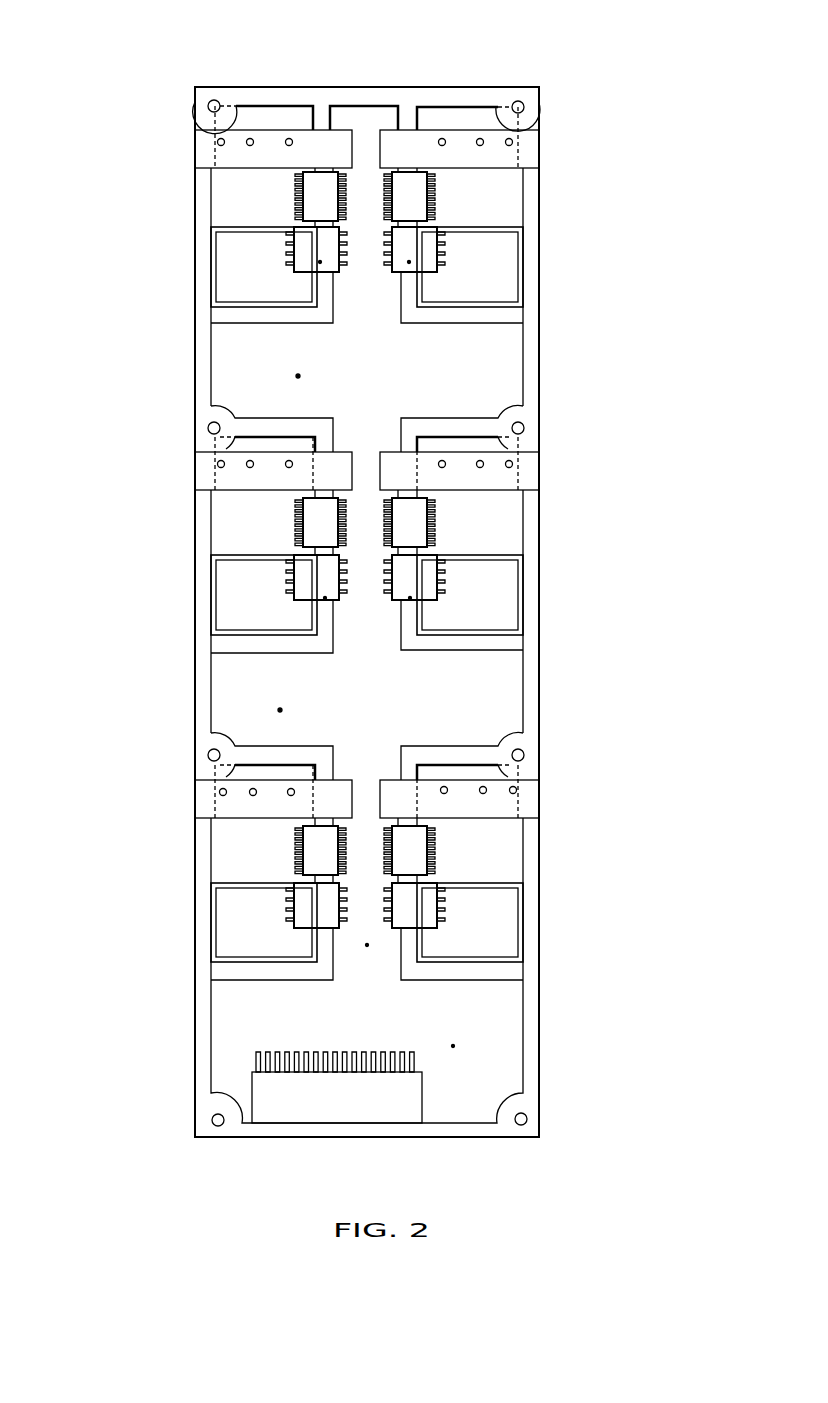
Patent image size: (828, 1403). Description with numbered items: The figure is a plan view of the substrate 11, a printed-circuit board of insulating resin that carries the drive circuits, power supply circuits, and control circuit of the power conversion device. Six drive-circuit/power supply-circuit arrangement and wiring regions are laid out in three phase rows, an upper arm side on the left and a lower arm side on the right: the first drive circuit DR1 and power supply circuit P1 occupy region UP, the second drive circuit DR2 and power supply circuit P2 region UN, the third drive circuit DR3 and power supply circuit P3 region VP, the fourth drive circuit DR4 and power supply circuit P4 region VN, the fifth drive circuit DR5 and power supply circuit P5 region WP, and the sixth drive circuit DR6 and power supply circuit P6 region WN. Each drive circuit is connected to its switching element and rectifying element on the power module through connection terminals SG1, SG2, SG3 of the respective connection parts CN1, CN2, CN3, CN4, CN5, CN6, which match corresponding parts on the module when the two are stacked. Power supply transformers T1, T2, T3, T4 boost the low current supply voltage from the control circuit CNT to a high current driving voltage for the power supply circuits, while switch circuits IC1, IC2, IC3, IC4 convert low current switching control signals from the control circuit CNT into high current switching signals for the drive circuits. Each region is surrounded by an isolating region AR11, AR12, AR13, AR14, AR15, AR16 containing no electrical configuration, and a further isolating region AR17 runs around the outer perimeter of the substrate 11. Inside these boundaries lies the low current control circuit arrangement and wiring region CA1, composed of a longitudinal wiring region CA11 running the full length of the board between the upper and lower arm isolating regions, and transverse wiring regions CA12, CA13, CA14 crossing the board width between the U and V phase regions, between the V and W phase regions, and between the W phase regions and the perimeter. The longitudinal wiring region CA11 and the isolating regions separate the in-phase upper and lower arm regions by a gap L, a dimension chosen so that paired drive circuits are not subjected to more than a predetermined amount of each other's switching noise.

The substrate 11 is at (542, 358).
The gap L is at (417, 168).
The connection terminal SG1 is at (221, 138).
The connection terminal SG2 is at (250, 138).
The connection terminal SG3 is at (289, 138).
The switch circuit IC1 is at (322, 182).
The switch circuit IC2 is at (402, 182).
The switch circuit IC3 is at (322, 520).
The switch circuit IC4 is at (404, 520).
The connection part CN1 is at (205, 153).
The connection part CN2 is at (535, 150).
The connection part CN3 is at (213, 421).
The connection part CN4 is at (538, 437).
The connection part CN5 is at (210, 770).
The connection part CN6 is at (535, 769).
The first drive circuit DR1 is at (211, 196).
The second drive circuit DR2 is at (523, 196).
The third drive circuit DR3 is at (211, 540).
The fourth drive circuit DR4 is at (523, 540).
The fifth drive circuit DR5 is at (211, 872).
The sixth drive circuit DR6 is at (523, 868).
The power supply circuit P1 is at (211, 263).
The power supply circuit P2 is at (523, 263).
The power supply circuit P3 is at (211, 602).
The power supply circuit P4 is at (523, 602).
The power supply circuit P5 is at (211, 926).
The power supply circuit P6 is at (523, 926).
The power supply transformer T1 is at (320, 262).
The power supply transformer T2 is at (409, 262).
The power supply transformer T3 is at (325, 598).
The power supply transformer T4 is at (410, 598).
The isolating region AR11 is at (268, 322).
The isolating region AR12 is at (523, 320).
The isolating region AR13 is at (272, 418).
The isolating region AR14 is at (477, 652).
The isolating region AR15 is at (260, 982).
The isolating region AR16 is at (497, 982).
The isolating region AR17 is at (208, 665).
The control circuit arrangement and wiring region CA1 is at (346, 687).
The longitudinal wiring region CA11 is at (367, 945).
The transverse wiring region CA12 is at (298, 376).
The transverse wiring region CA13 is at (280, 710).
The transverse wiring region CA14 is at (453, 1046).
The control circuit CNT is at (226, 1067).